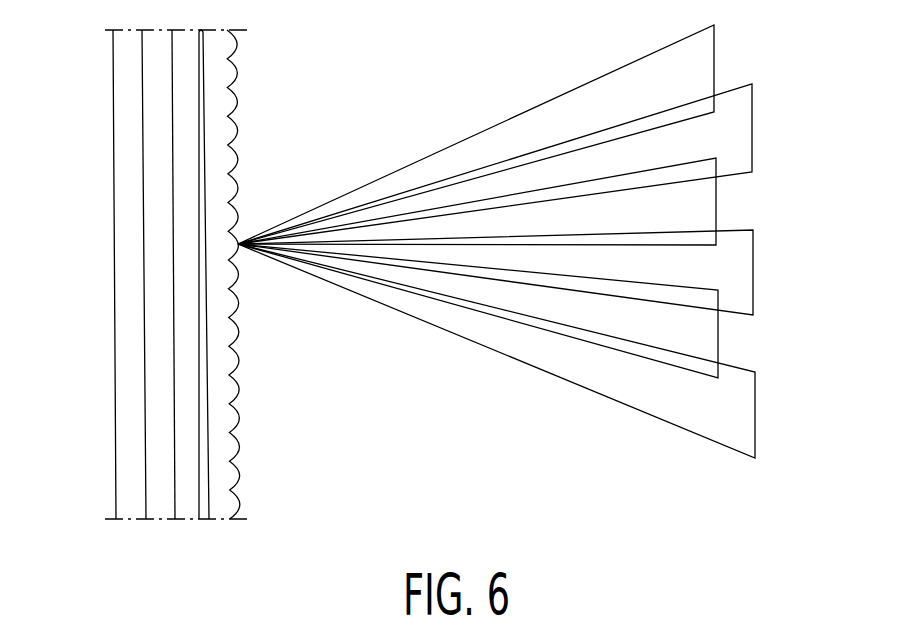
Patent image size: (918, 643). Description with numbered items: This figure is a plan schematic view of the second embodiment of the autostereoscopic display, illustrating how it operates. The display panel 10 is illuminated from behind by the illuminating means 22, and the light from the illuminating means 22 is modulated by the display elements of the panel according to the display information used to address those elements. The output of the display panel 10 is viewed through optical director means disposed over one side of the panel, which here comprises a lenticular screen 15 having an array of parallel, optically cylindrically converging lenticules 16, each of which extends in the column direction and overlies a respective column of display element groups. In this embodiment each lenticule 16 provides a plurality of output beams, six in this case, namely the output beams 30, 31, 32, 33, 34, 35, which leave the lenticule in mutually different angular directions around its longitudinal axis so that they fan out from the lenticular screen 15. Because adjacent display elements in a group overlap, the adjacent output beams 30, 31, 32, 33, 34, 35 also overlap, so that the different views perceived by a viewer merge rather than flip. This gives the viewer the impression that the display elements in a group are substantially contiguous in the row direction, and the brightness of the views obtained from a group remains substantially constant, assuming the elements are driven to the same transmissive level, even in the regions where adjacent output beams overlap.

The display panel 10 is at (190, 505).
The lenticular screen 15 is at (228, 507).
The lenticule 16 is at (237, 450).
The illuminating means 22 is at (130, 440).
The output beam 30 is at (740, 427).
The output beam 31 is at (703, 338).
The output beam 32 is at (745, 272).
The output beam 33 is at (698, 210).
The output beam 34 is at (740, 132).
The output beam 35 is at (705, 53).